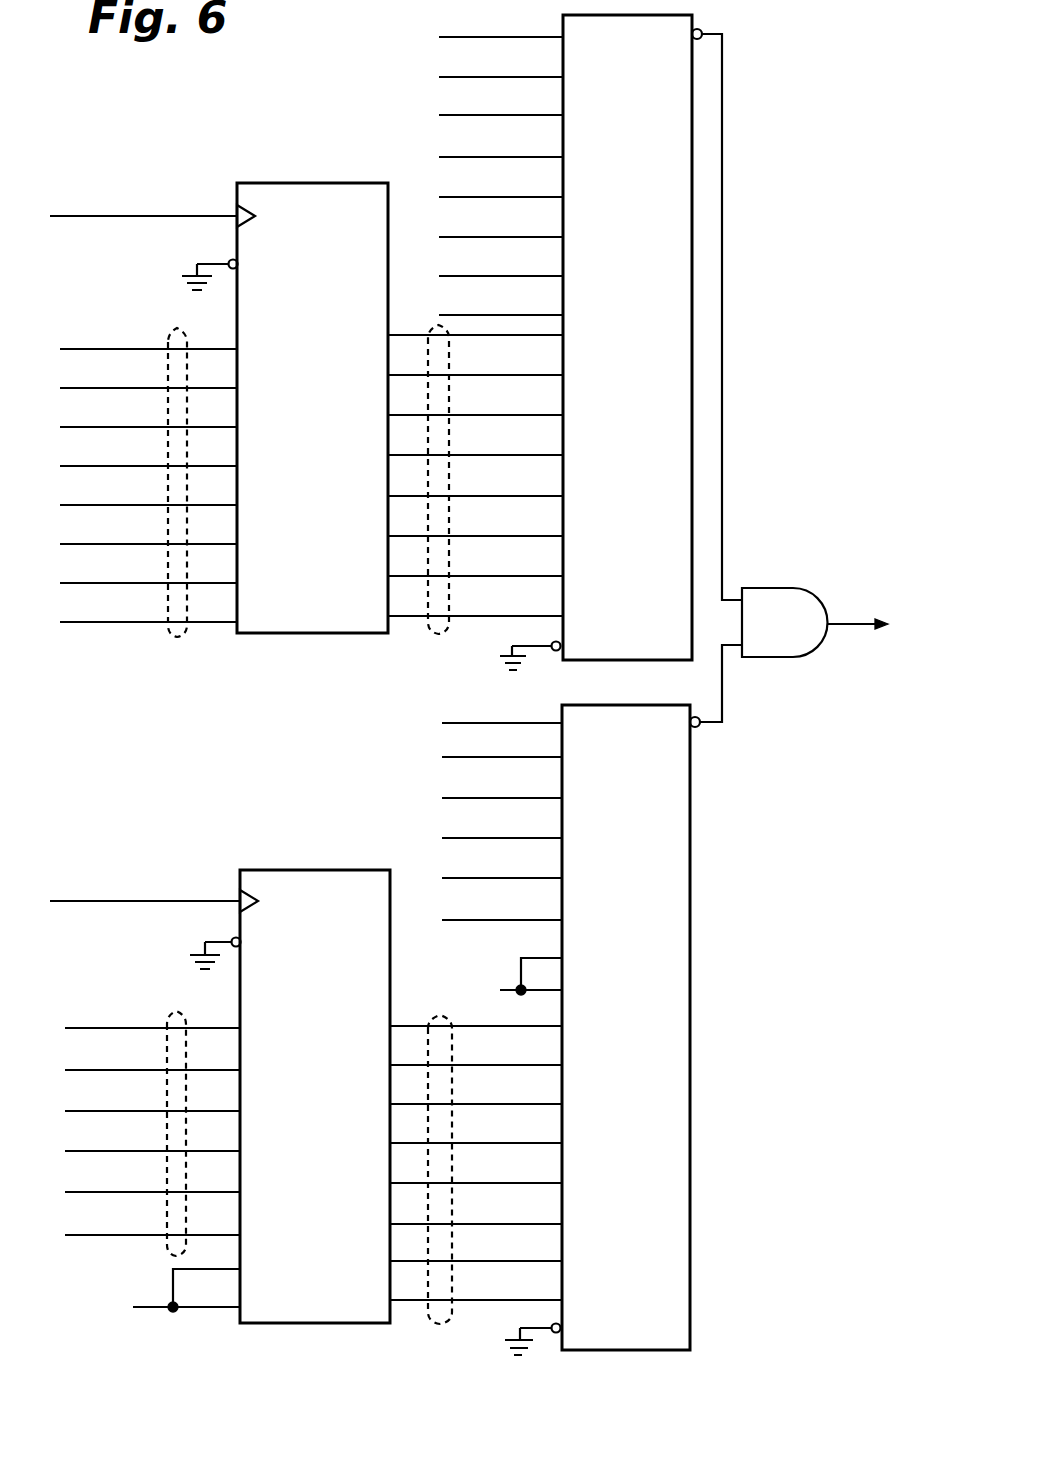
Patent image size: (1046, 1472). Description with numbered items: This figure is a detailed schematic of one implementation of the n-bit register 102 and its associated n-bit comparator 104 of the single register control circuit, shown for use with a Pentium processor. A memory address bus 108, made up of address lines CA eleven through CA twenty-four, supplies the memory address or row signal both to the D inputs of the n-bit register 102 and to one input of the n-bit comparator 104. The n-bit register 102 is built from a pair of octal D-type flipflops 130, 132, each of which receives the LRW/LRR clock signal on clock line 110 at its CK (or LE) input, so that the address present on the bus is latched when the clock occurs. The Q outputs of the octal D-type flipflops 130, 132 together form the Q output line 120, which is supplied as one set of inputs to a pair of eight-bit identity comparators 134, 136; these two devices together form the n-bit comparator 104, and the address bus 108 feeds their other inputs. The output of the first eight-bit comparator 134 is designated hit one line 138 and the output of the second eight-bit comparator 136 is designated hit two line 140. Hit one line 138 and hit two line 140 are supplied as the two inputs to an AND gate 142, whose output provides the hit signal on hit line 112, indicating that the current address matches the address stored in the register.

The n-bit register 102 is at (241, 708).
The n-bit comparator 104 is at (597, 683).
The memory address bus 108 is at (178, 326).
The clock line 110 is at (190, 216).
The hit line 112 is at (853, 630).
The Q output line 120 is at (437, 637).
The octal D-type flipflop 130 is at (345, 183).
The octal D-type flipflop 132 is at (356, 870).
The 8-bit comparator 134 is at (692, 293).
The 8-bit comparator 136 is at (690, 1128).
The hit 1 line 138 is at (722, 93).
The hit 2 line 140 is at (722, 677).
The AND gate 142 is at (745, 588).